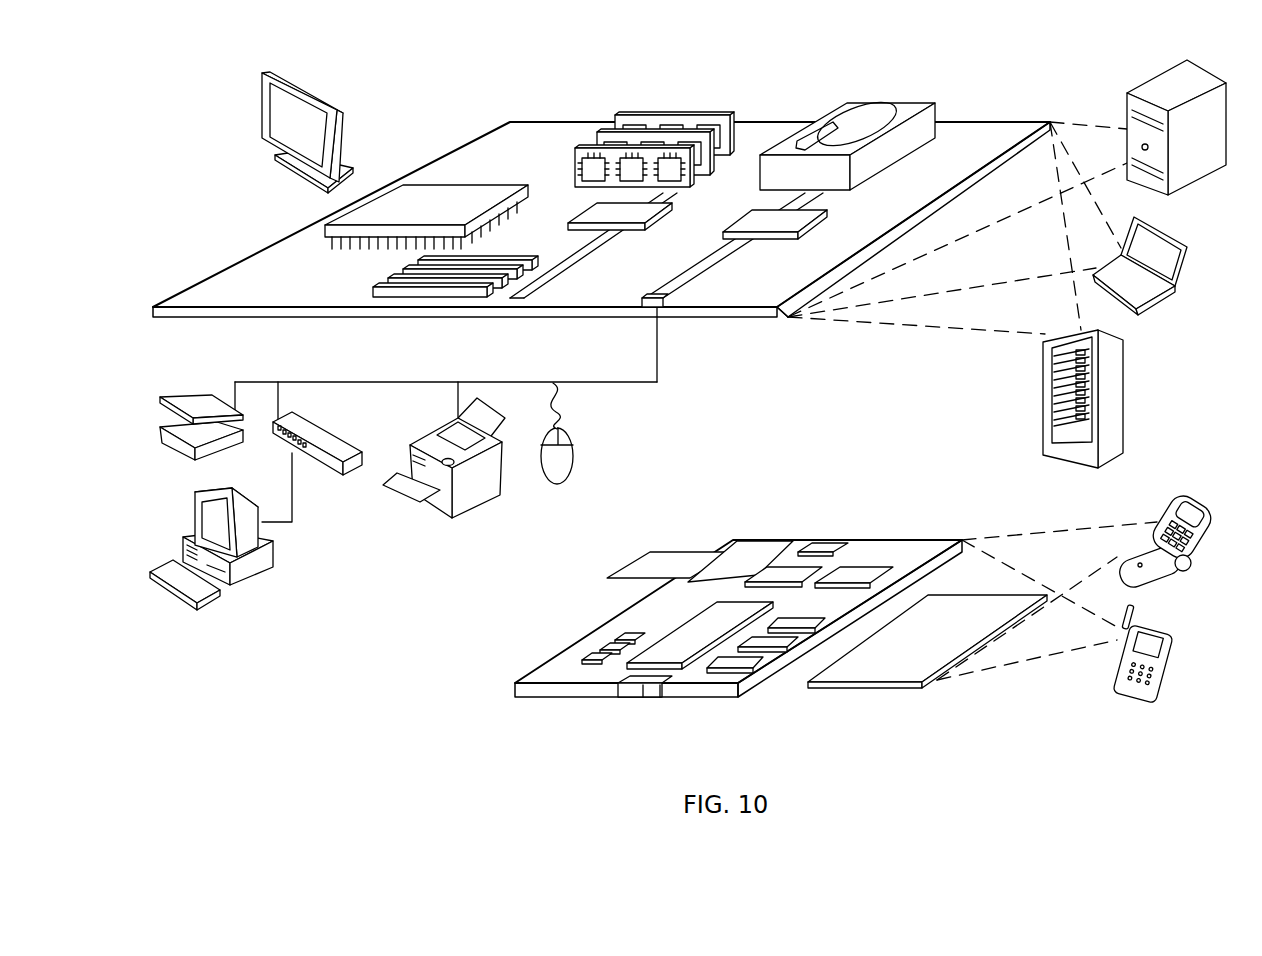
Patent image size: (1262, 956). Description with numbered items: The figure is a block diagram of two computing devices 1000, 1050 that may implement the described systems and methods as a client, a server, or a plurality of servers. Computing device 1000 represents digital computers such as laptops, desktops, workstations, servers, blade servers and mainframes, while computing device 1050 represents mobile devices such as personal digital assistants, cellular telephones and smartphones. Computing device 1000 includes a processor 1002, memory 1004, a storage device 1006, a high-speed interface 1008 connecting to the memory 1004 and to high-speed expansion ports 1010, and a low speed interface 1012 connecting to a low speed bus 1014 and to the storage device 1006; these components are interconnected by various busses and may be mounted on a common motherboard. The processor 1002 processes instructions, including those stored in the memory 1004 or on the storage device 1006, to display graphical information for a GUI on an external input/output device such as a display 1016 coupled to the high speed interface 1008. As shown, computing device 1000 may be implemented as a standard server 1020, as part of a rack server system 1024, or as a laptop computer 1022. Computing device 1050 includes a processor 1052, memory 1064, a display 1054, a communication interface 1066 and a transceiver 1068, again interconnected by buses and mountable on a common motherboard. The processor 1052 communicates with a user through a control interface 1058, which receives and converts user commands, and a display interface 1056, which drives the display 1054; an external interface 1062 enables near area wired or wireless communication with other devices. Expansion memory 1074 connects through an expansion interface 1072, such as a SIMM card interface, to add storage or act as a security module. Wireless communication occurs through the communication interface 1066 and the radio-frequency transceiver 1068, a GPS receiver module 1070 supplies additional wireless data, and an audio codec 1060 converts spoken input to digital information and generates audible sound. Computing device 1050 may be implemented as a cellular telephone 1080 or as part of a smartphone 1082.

The computing device 1000 is at (446, 100).
The processor 1002 is at (330, 228).
The memory 1004 is at (634, 120).
The storage device 1006 is at (846, 104).
The high-speed interface 1008 is at (600, 215).
The high-speed expansion ports 1010 is at (388, 281).
The low speed interface 1012 is at (758, 212).
The low speed bus 1014 is at (665, 308).
The display 1016 is at (266, 73).
The standard server 1020 is at (1127, 105).
The laptop computer 1022 is at (1189, 242).
The rack server system 1024 is at (1043, 419).
The computing device 1050 is at (489, 698).
The processor 1052 is at (676, 656).
The display 1054 is at (890, 672).
The display interface 1056 is at (738, 662).
The control interface 1058 is at (768, 643).
The audio codec 1060 is at (793, 624).
The external interface 1062 is at (645, 690).
The memory 1064 is at (600, 648).
The communication interface 1066 is at (785, 576).
The transceiver 1068 is at (863, 570).
The GPS receiver module 1070 is at (835, 542).
The expansion interface 1072 is at (710, 553).
The expansion memory 1074 is at (652, 552).
The cellular telephone 1080 is at (1172, 503).
The smartphone 1082 is at (1118, 660).